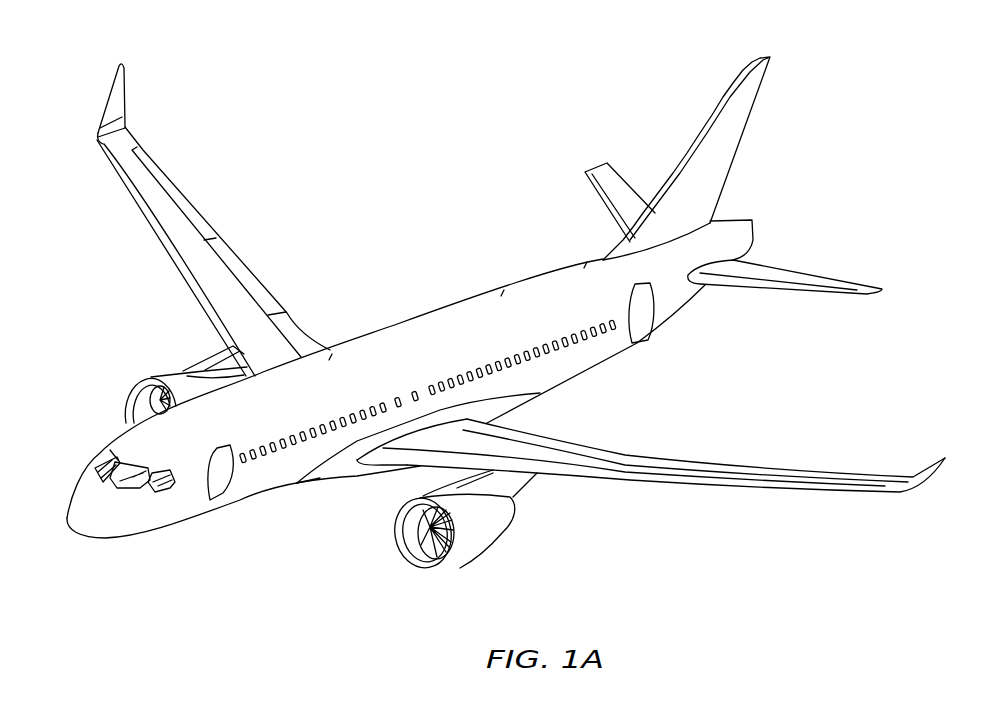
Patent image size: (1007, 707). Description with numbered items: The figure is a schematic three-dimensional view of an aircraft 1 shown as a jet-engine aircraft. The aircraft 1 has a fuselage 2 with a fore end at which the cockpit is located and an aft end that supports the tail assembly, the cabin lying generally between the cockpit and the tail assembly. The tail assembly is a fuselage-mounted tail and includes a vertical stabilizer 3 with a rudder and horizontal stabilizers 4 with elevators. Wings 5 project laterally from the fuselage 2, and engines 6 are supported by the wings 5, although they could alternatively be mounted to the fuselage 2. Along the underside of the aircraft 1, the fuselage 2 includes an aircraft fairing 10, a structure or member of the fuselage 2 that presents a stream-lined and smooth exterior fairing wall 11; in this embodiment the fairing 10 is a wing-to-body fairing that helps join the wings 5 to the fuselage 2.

The aircraft 1 is at (117, 52).
The fuselage 2 is at (262, 482).
The vertical stabilizer 3 is at (728, 117).
The horizontal stabilizers 4 is at (610, 193).
The wings 5 is at (235, 297).
The engines 6 is at (173, 375).
The aircraft fairing 10 is at (310, 511).
The exterior fairing wall 11 is at (338, 472).